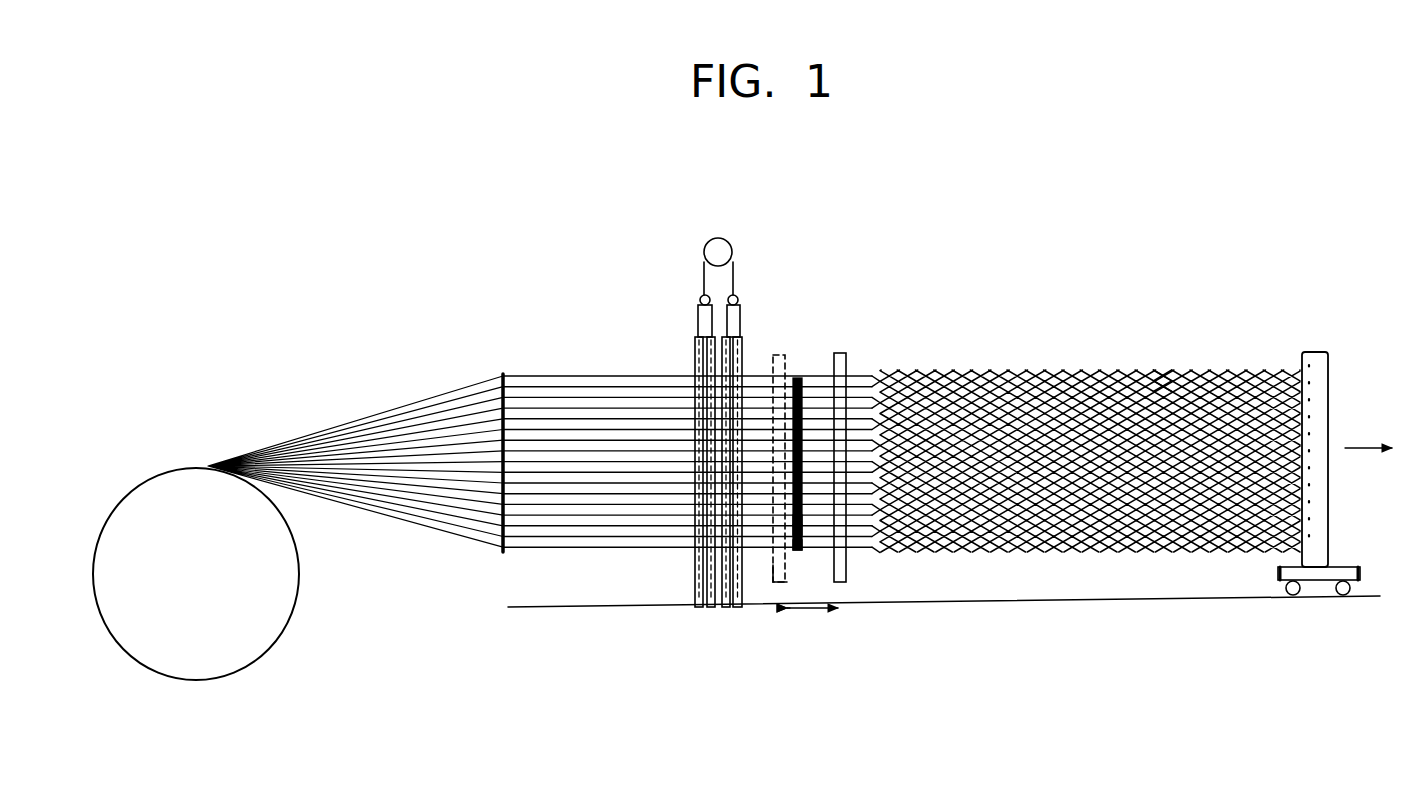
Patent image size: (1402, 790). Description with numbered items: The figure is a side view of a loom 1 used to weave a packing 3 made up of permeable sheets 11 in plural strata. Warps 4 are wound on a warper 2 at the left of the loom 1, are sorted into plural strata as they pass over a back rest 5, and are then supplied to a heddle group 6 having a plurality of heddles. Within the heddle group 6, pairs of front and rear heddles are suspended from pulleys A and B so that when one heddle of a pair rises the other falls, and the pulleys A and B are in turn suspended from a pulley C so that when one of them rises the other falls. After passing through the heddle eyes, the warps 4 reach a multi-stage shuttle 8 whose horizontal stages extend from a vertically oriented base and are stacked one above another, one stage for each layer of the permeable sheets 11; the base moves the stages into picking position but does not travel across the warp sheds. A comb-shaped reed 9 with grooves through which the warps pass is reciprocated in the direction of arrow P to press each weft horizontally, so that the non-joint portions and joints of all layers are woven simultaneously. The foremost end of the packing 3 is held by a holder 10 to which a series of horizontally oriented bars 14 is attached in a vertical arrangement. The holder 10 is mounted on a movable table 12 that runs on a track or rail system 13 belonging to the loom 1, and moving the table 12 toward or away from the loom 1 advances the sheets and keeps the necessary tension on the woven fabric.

The loom 1 is at (860, 262).
The warper 2 is at (279, 605).
The packing 3 is at (1088, 368).
The warps 4 is at (393, 410).
The back rest 5 is at (500, 377).
The heddle group 6 is at (679, 348).
The multi-stage shuttle 8 is at (797, 378).
The reed 9 is at (776, 355).
The holder 10 is at (1313, 353).
The permeable sheets 11 is at (1162, 370).
The movable table 12 is at (1340, 567).
The track or rail system 13 is at (1100, 601).
The horizontally oriented bars 14 is at (1310, 402).
The pulley A is at (700, 297).
The pulley B is at (738, 297).
The pulley C is at (716, 238).
The direction of reed reciprocation P is at (812, 628).